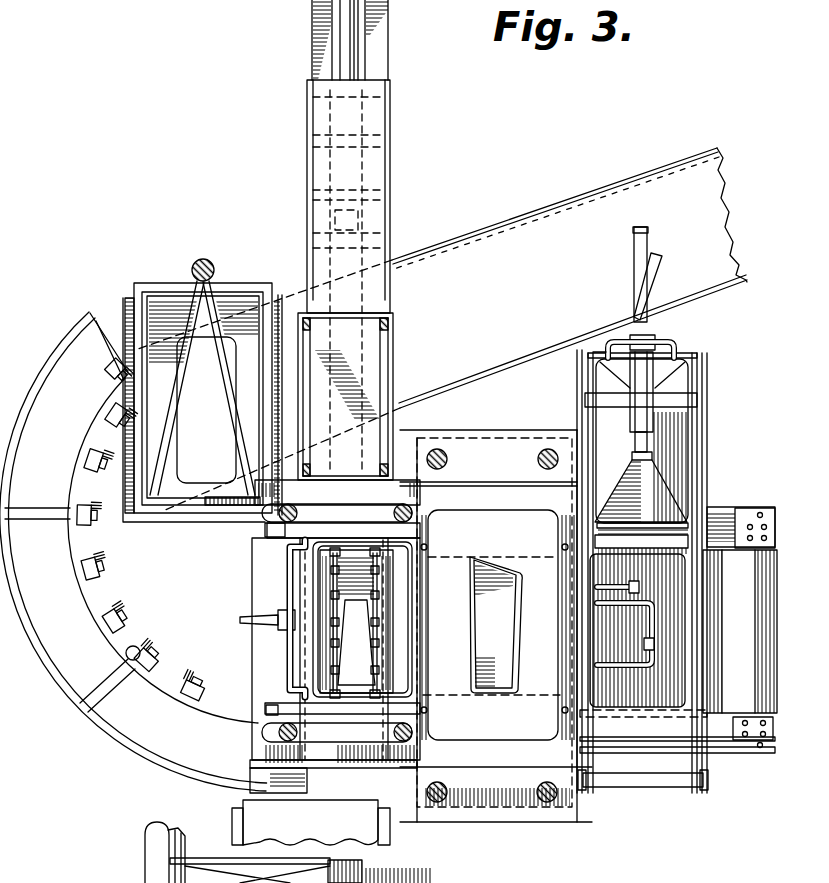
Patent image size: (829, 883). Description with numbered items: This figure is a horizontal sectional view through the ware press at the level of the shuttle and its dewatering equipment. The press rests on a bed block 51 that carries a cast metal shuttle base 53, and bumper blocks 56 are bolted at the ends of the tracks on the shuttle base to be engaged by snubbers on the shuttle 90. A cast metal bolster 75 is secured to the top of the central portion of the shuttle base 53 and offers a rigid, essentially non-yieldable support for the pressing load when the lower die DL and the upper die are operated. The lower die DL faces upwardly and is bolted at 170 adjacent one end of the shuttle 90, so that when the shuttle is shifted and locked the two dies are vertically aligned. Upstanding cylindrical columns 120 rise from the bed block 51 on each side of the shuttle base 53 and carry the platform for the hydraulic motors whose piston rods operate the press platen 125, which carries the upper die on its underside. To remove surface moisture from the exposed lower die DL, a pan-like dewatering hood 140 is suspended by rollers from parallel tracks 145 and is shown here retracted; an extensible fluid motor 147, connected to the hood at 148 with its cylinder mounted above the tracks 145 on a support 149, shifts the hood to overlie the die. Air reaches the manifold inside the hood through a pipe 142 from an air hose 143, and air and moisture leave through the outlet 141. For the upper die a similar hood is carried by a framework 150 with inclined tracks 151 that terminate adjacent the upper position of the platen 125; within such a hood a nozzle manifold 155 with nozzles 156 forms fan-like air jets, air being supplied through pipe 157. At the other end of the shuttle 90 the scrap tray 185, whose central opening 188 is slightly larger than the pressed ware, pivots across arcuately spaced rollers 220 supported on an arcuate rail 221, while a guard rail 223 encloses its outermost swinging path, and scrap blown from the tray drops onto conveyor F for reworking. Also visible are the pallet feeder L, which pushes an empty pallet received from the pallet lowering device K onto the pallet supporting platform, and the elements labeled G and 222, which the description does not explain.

The pallet feeder L is at (391, 165).
The conveyor F is at (505, 236).
The pallet lowering device K is at (394, 318).
The roller G is at (250, 820).
The lower die DL is at (466, 722).
The bed block 51 is at (452, 818).
The shuttle base 53 is at (718, 506).
The bumper blocks 56 is at (745, 523).
The bolster 75 is at (455, 562).
The shuttle 90 is at (256, 748).
The cylindrical columns 120 is at (538, 456).
The press platen 125 is at (497, 430).
The dewatering hood 140 is at (684, 432).
The outlet 141 is at (623, 344).
The pipe 142 is at (674, 338).
The air hose 143 is at (662, 272).
The parallel tracks 145 is at (688, 733).
The extensible fluid motor 147 is at (633, 262).
The hood connection 148 is at (652, 456).
The support 149 is at (692, 397).
The framework 150 is at (300, 506).
The inclined tracks 151 is at (262, 540).
The nozzle manifold 155 is at (333, 632).
The nozzles 156 is at (333, 650).
The pipe 157 is at (283, 580).
The bolted connection 170 is at (562, 710).
The scrap tray 185 is at (128, 300).
The central opening 188 is at (186, 418).
The rollers 220 is at (106, 544).
The arcuate rail 221 is at (143, 591).
The support post 222 is at (146, 877).
The guard rail 223 is at (73, 706).